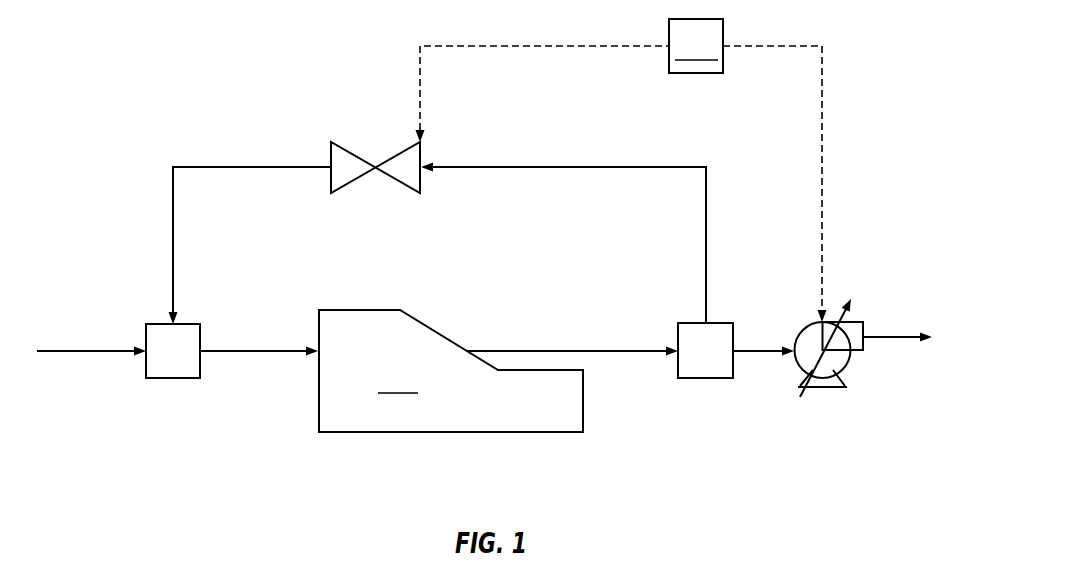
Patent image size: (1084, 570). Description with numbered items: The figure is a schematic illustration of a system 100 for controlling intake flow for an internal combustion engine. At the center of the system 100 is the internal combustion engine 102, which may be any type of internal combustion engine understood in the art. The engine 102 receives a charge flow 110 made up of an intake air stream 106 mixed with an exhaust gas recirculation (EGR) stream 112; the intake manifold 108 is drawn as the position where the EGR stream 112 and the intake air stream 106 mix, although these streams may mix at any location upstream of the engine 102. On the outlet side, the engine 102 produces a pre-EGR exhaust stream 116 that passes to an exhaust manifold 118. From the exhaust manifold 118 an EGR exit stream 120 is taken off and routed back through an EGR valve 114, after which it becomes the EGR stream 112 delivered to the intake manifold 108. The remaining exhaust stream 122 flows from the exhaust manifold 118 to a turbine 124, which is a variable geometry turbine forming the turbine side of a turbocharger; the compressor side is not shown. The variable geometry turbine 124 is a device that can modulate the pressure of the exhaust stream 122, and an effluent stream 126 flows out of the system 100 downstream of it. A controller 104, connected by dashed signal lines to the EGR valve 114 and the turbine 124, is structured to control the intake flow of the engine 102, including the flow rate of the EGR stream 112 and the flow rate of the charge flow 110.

The system 100 is at (208, 68).
The internal combustion engine 102 is at (451, 371).
The controller 104 is at (621, 170).
The intake air stream 106 is at (92, 353).
The intake manifold 108 is at (173, 379).
The charge flow 110 is at (260, 353).
The exhaust gas recirculation (EGR) stream 112 is at (173, 245).
The EGR valve 114 is at (375, 167).
The pre-EGR exhaust stream 116 is at (572, 350).
The exhaust manifold 118 is at (706, 379).
The EGR exit stream 120 is at (706, 245).
The exhaust stream 122 is at (762, 350).
The variable geometry turbine 124 is at (822, 388).
The effluent stream 126 is at (898, 333).